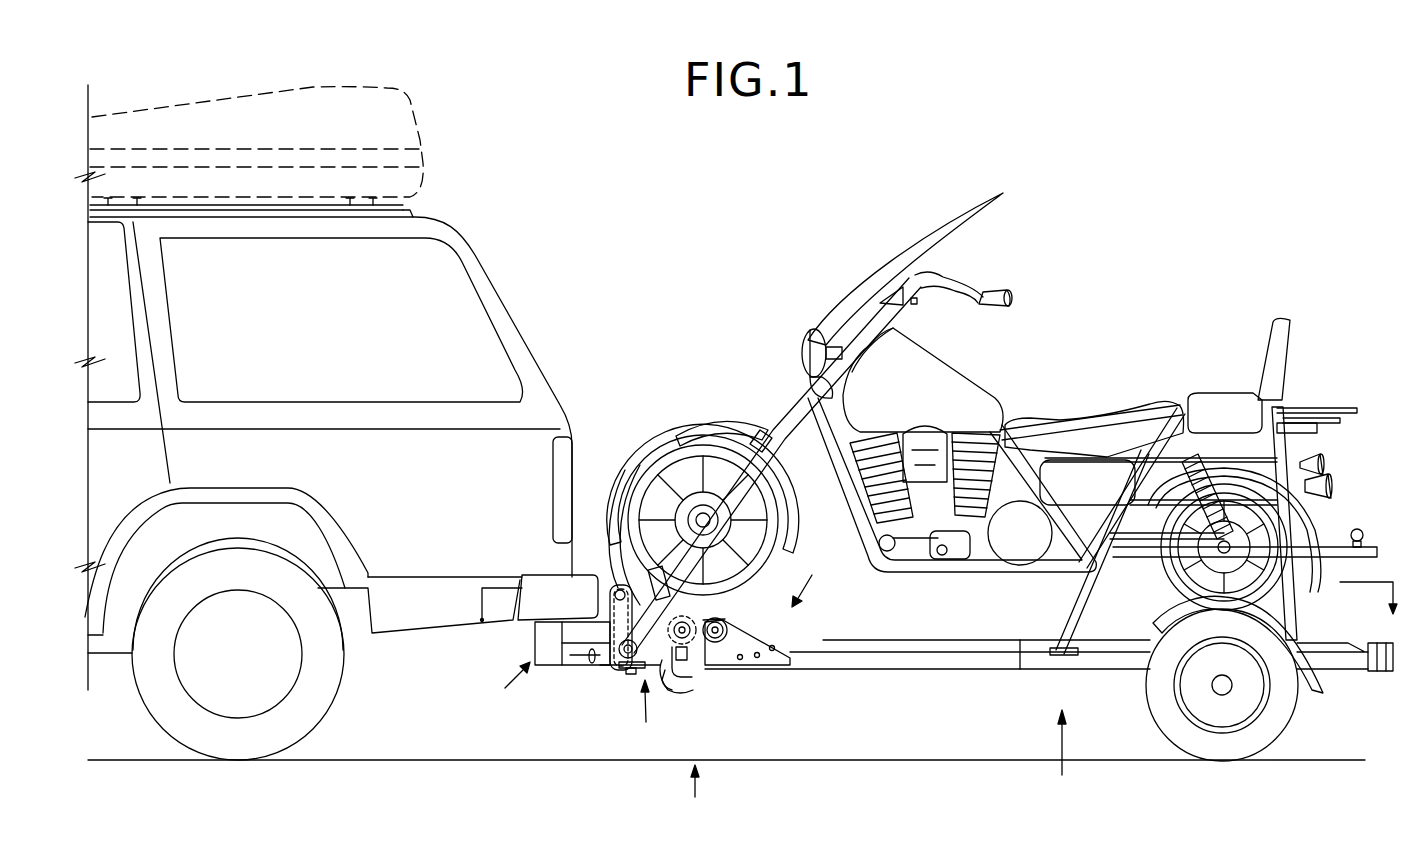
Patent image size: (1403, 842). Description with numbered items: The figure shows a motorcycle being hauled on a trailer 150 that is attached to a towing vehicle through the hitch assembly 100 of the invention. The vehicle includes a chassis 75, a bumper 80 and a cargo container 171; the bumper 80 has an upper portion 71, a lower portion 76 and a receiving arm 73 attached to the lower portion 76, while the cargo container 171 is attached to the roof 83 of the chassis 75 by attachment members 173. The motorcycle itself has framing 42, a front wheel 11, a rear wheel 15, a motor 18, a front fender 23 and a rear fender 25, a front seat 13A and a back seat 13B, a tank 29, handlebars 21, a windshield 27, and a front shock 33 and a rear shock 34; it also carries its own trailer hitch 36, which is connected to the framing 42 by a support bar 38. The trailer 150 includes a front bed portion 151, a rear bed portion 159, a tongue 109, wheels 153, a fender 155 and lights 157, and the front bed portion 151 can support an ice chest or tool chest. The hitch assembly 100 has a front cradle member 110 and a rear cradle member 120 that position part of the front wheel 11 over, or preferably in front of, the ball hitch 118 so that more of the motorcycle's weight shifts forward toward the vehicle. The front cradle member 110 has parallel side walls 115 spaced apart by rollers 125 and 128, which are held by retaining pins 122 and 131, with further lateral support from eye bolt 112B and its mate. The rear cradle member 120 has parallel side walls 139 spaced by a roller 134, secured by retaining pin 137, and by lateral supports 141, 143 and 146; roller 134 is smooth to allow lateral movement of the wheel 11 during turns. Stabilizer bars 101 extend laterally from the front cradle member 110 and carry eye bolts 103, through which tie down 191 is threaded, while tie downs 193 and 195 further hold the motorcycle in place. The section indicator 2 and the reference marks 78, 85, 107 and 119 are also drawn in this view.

The section line 2 is at (936, 617).
The front wheel 11 is at (668, 428).
The front seat 13A is at (1060, 430).
The back seat 13B is at (1288, 348).
The rear wheel 15 is at (1302, 590).
The motor 18 is at (864, 535).
The handlebars 21 is at (955, 283).
The front fender 23 is at (706, 418).
The rear fender 25 is at (1324, 489).
The windshield 27 is at (905, 262).
The tank 29 is at (930, 388).
The front shock 33 is at (757, 428).
The rear shock 34 is at (1212, 548).
The trailer hitch 36 is at (1358, 528).
The support bar 38 is at (1211, 519).
The framing 42 is at (1050, 575).
The upper portion 71 is at (560, 578).
The receiving arm 73 is at (580, 657).
The chassis 75 is at (427, 495).
The lower portion 76 is at (537, 646).
The vehicle wheel 78 is at (315, 700).
The bumper 80 is at (505, 685).
The roof 83 is at (445, 222).
The retaining pin 85 is at (593, 649).
The hitch assembly 100 is at (695, 794).
The stabilizer bar 101 is at (622, 660).
The eye bolt 103 is at (598, 667).
The hook 107 is at (678, 688).
The tongue 109 is at (694, 668).
The front cradle member 110 is at (648, 707).
The eye bolt 112B is at (618, 495).
The side walls 115 is at (627, 627).
The hitch 118 is at (692, 682).
The base plate 119 is at (631, 676).
The rear cradle member 120 is at (638, 649).
The retaining pin 122 is at (628, 485).
The roller 125 is at (615, 590).
The roller 128 is at (689, 623).
The retaining pin 131 is at (672, 576).
The roller 134 is at (727, 624).
The retaining pin 137 is at (727, 630).
The side walls 139 is at (795, 648).
The lateral support 141 is at (742, 661).
The lateral support 143 is at (759, 659).
The lateral support 146 is at (774, 652).
The trailer 150 is at (1200, 604).
The front bed portion 151 is at (1015, 670).
The wheels 153 is at (1275, 720).
The fender 155 is at (1300, 642).
The lights 157 is at (1378, 676).
The rear bed portion 159 is at (1085, 658).
The cargo container 171 is at (320, 95).
The attachment members 173 is at (122, 212).
The tie down 191 is at (784, 443).
The tie down 193 is at (1085, 604).
The tie down 195 is at (1292, 445).